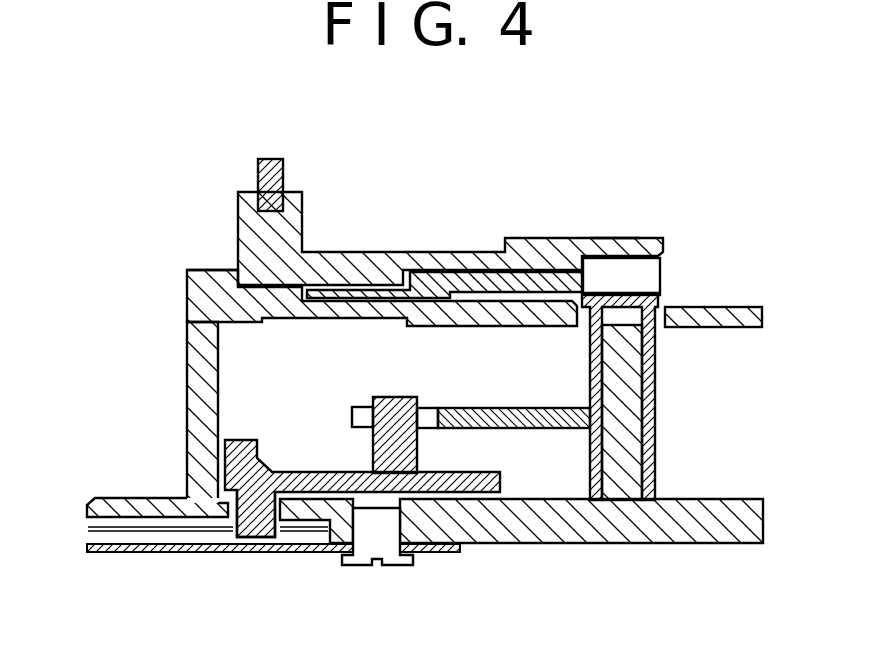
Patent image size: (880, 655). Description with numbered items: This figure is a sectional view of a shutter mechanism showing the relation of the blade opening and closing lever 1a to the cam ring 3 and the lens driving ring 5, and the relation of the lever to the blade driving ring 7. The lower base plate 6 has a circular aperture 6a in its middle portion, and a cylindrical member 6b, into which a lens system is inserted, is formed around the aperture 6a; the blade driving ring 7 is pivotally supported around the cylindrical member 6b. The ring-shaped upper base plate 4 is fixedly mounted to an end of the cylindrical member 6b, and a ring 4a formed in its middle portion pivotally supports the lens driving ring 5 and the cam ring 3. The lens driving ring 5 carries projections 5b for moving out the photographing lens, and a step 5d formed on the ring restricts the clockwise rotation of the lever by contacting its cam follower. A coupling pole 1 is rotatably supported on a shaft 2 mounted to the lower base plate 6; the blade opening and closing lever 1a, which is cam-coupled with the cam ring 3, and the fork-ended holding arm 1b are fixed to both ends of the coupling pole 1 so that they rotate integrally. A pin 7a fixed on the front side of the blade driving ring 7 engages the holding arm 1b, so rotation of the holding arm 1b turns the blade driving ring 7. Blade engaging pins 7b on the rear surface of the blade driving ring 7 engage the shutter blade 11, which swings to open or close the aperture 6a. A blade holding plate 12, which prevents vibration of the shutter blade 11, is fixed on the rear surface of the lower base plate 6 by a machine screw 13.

The coupling pole 1 is at (656, 452).
The blade opening and closing lever 1a is at (662, 265).
The holding arm 1b is at (465, 407).
The shaft 2 is at (641, 378).
The cam ring 3 is at (505, 295).
The upper base plate 4 is at (187, 283).
The ring 4a is at (210, 270).
The lens driving ring 5 is at (313, 253).
The projection 5b is at (283, 170).
The step 5d is at (613, 243).
The lower base plate 6 is at (674, 500).
The aperture 6a is at (96, 497).
The cylindrical member 6b is at (186, 460).
The blade driving ring 7 is at (273, 473).
The pin 7a is at (383, 397).
The blade engaging pin 7b is at (262, 540).
The shutter blade 11 is at (90, 531).
The blade holding plate 12 is at (213, 556).
The machine screw 13 is at (392, 565).